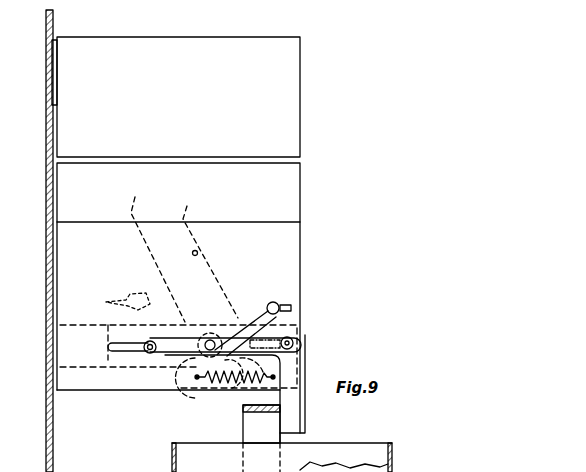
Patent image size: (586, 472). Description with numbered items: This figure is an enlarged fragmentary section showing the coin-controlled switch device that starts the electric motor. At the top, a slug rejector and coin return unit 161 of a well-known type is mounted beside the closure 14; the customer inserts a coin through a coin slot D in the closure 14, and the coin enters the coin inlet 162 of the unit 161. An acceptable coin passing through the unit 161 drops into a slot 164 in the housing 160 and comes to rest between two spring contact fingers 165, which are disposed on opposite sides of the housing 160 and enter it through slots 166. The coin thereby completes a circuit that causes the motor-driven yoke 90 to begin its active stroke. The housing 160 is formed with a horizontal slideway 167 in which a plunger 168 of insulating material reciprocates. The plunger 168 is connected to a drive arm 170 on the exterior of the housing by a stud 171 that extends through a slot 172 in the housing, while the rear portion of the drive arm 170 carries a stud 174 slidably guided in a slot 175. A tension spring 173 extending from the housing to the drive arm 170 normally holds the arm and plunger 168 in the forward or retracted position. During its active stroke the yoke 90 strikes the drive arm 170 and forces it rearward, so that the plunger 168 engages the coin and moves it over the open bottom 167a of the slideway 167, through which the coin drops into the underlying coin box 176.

The closure 14 is at (52, 18).
The coin slot D is at (50, 50).
The coin inlet 162 is at (53, 68).
The slug rejector and coin return unit 161 is at (175, 110).
The housing 160 is at (178, 298).
The slot 164 is at (199, 253).
The spring contact fingers 165 is at (146, 296).
The slot 172 is at (122, 341).
The slots 166 is at (212, 357).
The stud 171 is at (150, 354).
The stud 174 is at (293, 346).
The slot 175 is at (301, 328).
The horizontal slideway 167 is at (87, 368).
The plunger 168 is at (105, 368).
The open bottom 167a is at (235, 405).
The tension spring 173 is at (220, 383).
The motor-driven yoke 90 is at (222, 413).
The drive arm 170 is at (299, 418).
The coin box 176 is at (282, 457).